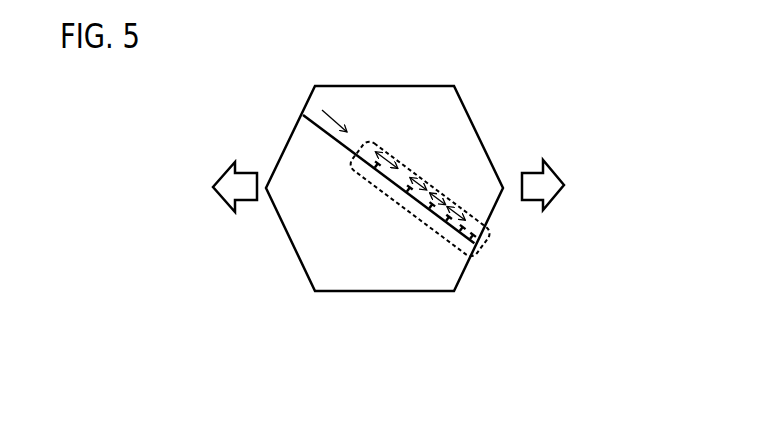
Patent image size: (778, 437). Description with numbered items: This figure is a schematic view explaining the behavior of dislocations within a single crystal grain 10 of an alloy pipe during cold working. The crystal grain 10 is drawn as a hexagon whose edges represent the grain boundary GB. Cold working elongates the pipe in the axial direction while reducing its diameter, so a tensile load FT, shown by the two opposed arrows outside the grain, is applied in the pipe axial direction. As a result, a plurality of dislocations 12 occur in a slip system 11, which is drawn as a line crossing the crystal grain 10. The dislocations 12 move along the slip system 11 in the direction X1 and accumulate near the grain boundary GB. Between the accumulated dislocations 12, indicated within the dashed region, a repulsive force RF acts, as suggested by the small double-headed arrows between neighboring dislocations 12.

The crystal grain 10 is at (389, 70).
The slip system 11 is at (321, 130).
The dislocations 12 is at (376, 168).
The grain boundary GB is at (291, 248).
The repulsive force RF is at (389, 146).
The tensile load FT is at (391, 186).
The direction X1 is at (342, 114).